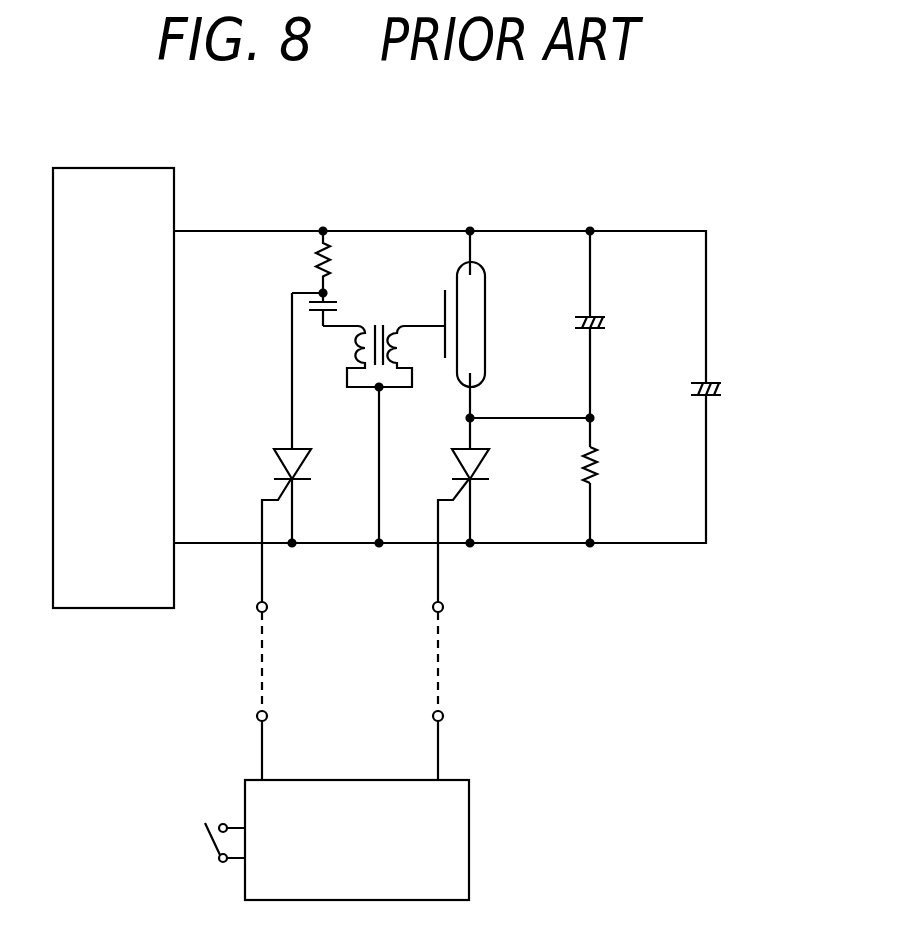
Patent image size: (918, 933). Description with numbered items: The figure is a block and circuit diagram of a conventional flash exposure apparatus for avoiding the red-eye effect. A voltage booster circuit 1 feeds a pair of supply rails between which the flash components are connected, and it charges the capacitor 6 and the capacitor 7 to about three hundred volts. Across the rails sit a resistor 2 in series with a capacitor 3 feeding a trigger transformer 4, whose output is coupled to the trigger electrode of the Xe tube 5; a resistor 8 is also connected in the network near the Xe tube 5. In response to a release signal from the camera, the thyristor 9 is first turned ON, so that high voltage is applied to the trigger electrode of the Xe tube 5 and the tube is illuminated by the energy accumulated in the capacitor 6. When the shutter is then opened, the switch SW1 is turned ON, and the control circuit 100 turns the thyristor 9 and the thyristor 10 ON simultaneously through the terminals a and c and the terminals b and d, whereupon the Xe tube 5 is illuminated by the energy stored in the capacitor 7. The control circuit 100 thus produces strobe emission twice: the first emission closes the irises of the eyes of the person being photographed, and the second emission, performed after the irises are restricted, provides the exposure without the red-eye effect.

The voltage booster circuit 1 is at (174, 192).
The resistor 2 is at (318, 258).
The capacitor 3 is at (338, 306).
The trigger transformer 4 is at (377, 390).
The Xe tube 5 is at (487, 310).
The capacitor 6 is at (608, 321).
The capacitor 7 is at (725, 389).
The resistor 8 is at (596, 448).
The thyristor 9 is at (304, 459).
The thyristor 10 is at (484, 457).
The control circuit 100 is at (469, 822).
The switch SW1 is at (204, 840).
The terminal a is at (268, 605).
The terminal b is at (444, 605).
The terminal c is at (268, 715).
The terminal d is at (444, 715).